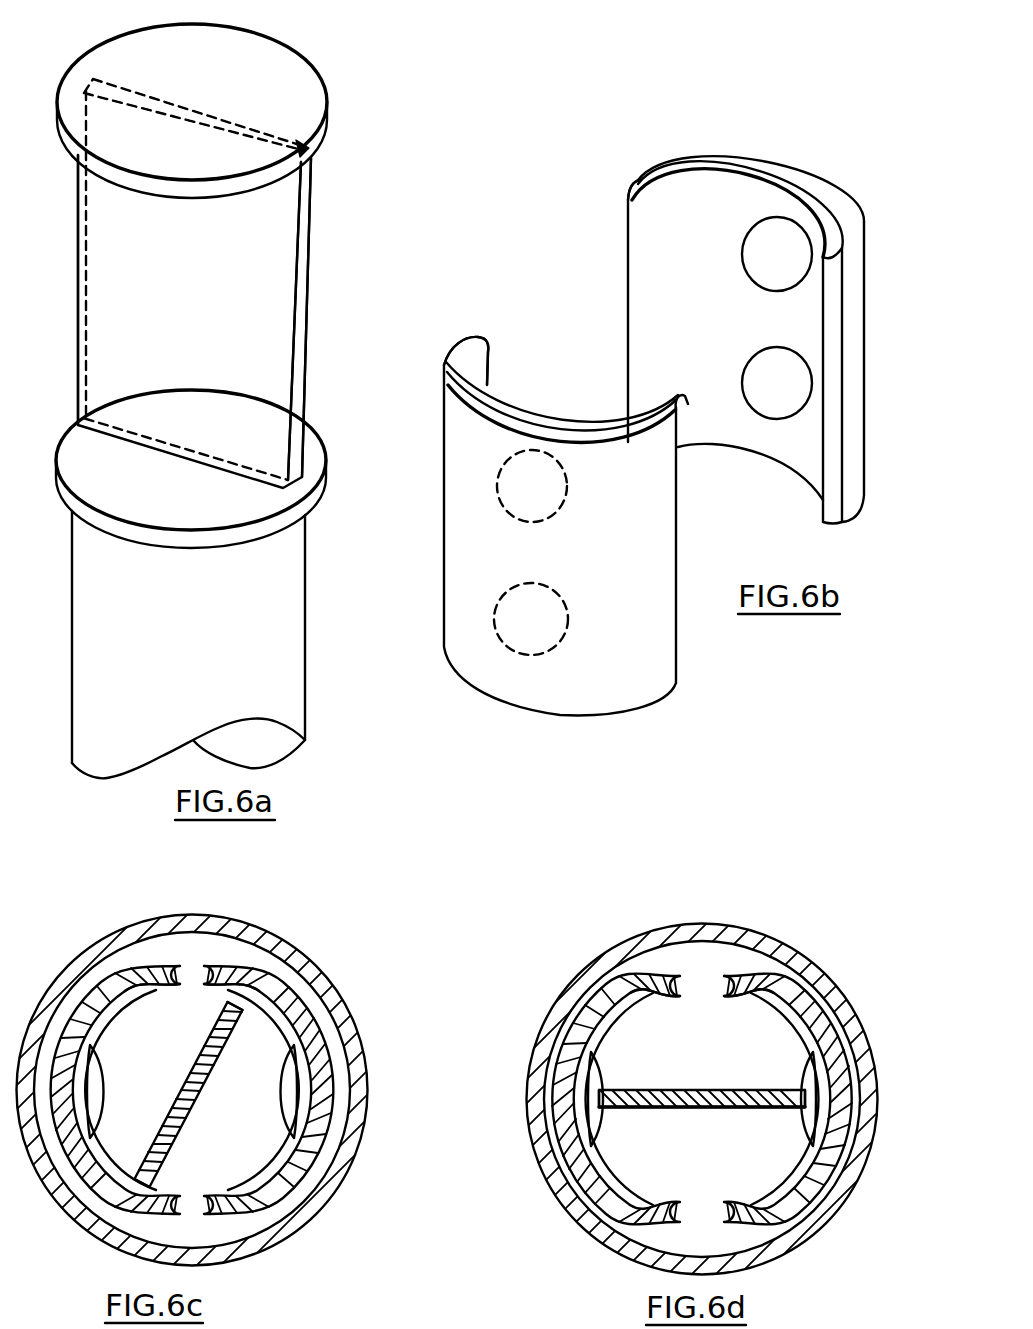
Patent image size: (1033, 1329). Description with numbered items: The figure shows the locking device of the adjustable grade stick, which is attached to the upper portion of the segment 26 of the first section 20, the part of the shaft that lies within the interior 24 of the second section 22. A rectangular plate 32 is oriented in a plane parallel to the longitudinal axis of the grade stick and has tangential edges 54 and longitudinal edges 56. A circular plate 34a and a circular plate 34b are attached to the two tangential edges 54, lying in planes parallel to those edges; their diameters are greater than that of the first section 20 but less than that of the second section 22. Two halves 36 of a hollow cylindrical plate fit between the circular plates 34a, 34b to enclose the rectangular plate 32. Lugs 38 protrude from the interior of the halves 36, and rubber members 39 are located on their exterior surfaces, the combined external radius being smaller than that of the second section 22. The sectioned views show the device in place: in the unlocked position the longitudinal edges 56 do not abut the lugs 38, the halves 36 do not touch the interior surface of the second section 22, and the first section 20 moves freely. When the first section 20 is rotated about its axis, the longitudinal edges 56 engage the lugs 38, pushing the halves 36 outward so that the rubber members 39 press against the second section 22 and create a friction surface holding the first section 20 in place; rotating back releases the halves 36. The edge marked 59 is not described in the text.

In FIG. 6A, the first section 20 is at (64, 750).
In FIG. 6C, the second section 22 is at (309, 963).
In FIG. 6D, the second section 22 is at (822, 971).
In FIG. 6C, the interior 24 is at (192, 947).
In FIG. 6D, the interior 24 is at (702, 960).
In FIG. 6A, the segment 26 is at (85, 580).
In FIG. 6A, the rectangular plate 32 is at (111, 323).
In FIG. 6C, the rectangular plate 32 is at (176, 1094).
In FIG. 6D, the rectangular plate 32 is at (726, 1089).
In FIG. 6A, the circular plate 34a is at (314, 450).
In FIG. 6A, the circular plate 34b is at (300, 62).
In FIG. 6B, the halves of a hollow cylindrical plate 36 is at (630, 220).
In FIG. 6C, the halves of a hollow cylindrical plate 36 is at (219, 996).
In FIG. 6D, the halves of a hollow cylindrical plate 36 is at (636, 1191).
In FIG. 6B, the lugs 38 is at (750, 252).
In FIG. 6C, the lugs 38 is at (105, 1082).
In FIG. 6D, the lugs 38 is at (601, 1071).
In FIG. 6B, the rubber members 39 is at (747, 157).
In FIG. 6C, the rubber members 39 is at (96, 983).
In FIG. 6D, the rubber members 39 is at (602, 985).
In FIG. 6A, the tangential edges 54 is at (229, 123).
In FIG. 6A, the longitudinal edges 56 is at (84, 217).
In FIG. 6C, the longitudinal edges 56 is at (257, 1016).
In FIG. 6D, the longitudinal edges 56 is at (606, 1110).
In FIG. 6D, the plate edge 59 is at (805, 1112).